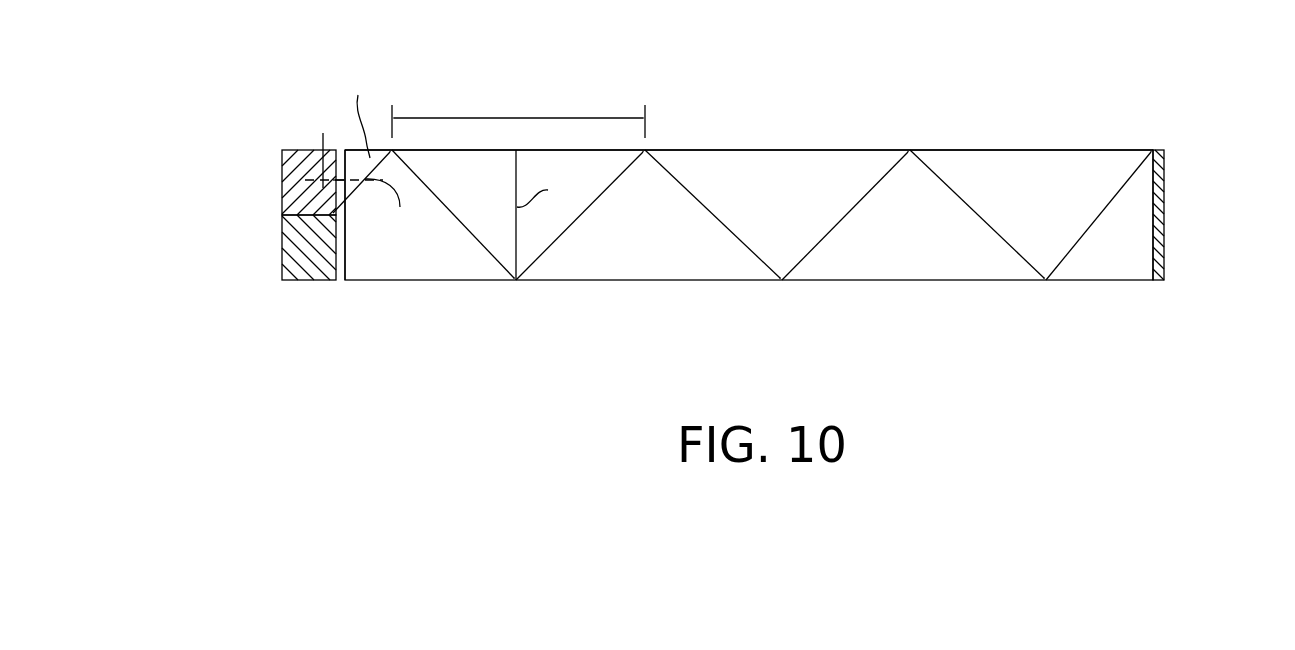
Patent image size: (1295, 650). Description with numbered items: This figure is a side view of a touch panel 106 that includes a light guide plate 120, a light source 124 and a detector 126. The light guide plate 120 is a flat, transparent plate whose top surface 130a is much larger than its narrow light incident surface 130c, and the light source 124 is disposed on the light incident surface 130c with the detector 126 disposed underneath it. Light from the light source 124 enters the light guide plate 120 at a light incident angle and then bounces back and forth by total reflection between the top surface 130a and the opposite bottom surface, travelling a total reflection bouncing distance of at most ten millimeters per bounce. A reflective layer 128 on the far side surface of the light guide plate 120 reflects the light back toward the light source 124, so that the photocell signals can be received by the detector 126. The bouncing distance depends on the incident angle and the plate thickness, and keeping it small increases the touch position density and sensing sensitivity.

The touch panel 106 is at (1252, 349).
The light guide plate 120 is at (1040, 173).
The light source 124 is at (298, 188).
The detector 126 is at (298, 246).
The reflective layer 128 is at (1165, 200).
The top surface 130a is at (978, 146).
The light incident surface 130c is at (344, 258).